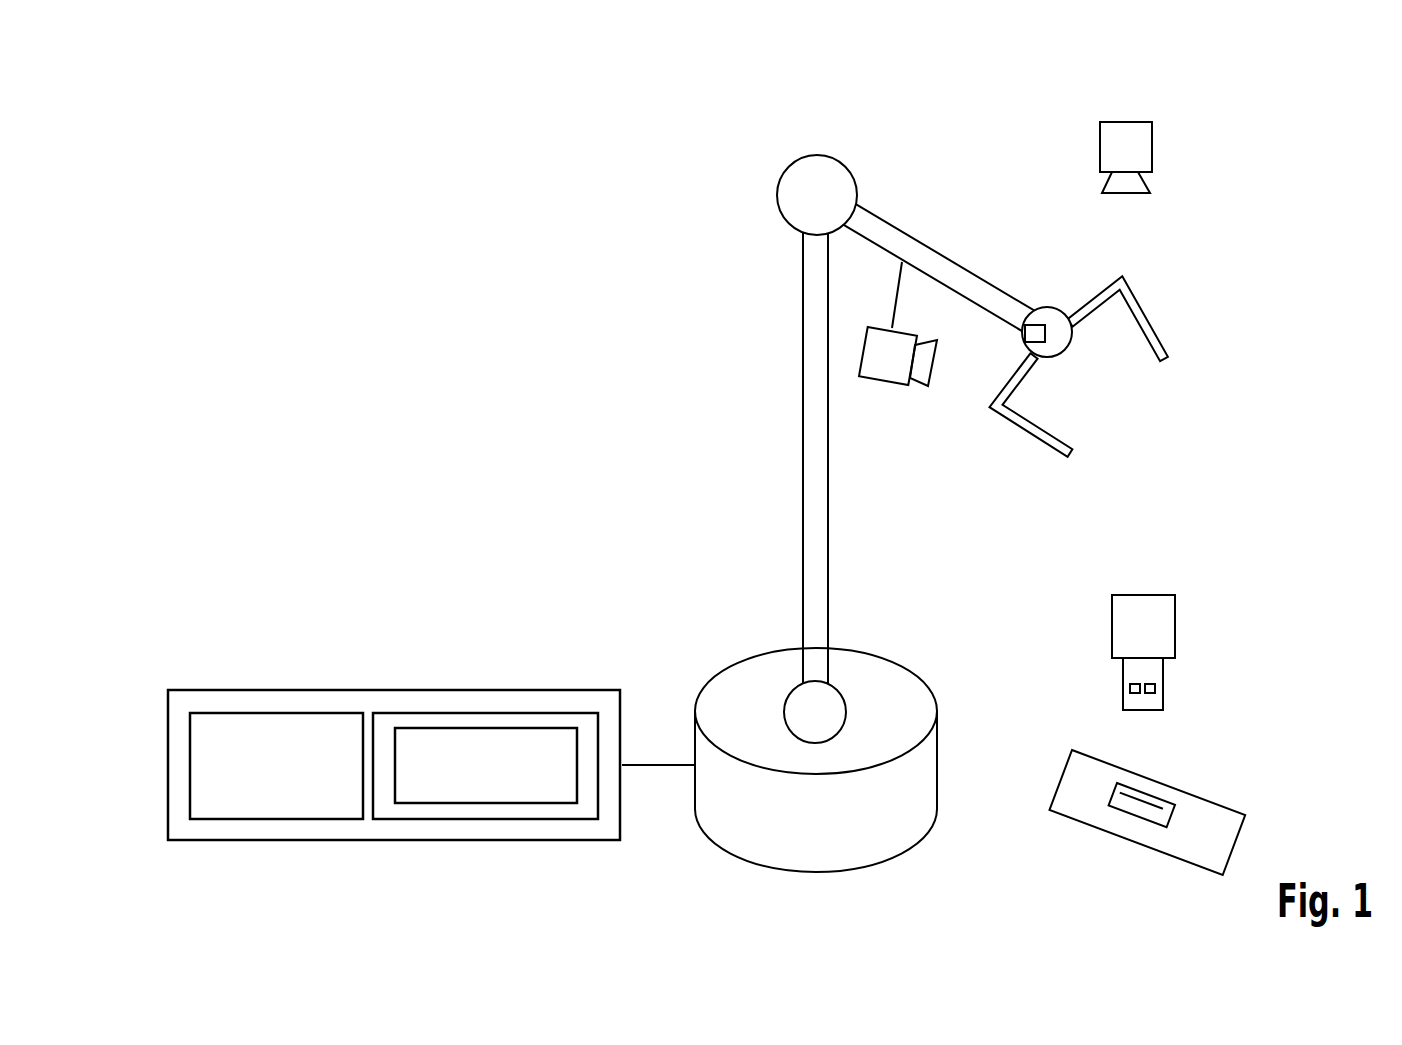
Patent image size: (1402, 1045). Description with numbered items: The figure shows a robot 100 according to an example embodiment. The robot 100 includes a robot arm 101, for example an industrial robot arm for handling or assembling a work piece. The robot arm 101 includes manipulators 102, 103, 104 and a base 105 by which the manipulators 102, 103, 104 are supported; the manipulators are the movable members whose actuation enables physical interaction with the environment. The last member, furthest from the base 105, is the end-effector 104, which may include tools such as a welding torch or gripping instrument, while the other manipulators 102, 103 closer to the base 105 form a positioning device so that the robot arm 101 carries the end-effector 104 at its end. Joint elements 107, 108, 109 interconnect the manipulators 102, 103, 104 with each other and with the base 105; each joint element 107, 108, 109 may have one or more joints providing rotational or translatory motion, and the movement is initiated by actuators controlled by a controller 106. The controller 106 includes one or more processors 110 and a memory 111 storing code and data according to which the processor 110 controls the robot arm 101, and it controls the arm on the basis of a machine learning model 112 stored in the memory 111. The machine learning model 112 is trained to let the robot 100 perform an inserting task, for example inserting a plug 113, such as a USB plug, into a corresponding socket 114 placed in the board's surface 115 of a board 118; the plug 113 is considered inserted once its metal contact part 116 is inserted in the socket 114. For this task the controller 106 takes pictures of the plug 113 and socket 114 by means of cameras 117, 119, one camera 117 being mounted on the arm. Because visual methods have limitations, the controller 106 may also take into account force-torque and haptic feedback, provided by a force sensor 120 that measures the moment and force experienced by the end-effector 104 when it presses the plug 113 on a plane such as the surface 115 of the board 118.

The robot 100 is at (1220, 180).
The robot arm 101 is at (728, 315).
The manipulator 102 is at (818, 527).
The manipulator 103 is at (962, 276).
The end-effector 104 is at (1153, 328).
The base 105 is at (925, 767).
The controller 106 is at (394, 759).
The joint element 107 is at (832, 705).
The joint element 108 is at (778, 197).
The joint element 109 is at (1050, 352).
The processor 110 is at (268, 819).
The memory 111 is at (483, 820).
The machine learning model 112 is at (497, 728).
The plug 113 is at (1178, 619).
The socket 114 is at (1157, 800).
The board's surface 115 is at (1095, 818).
The metal contact part 116 is at (1163, 683).
The camera 117 is at (880, 382).
The board 118 is at (1170, 808).
The camera 119 is at (1108, 145).
The force sensor 120 is at (1045, 323).